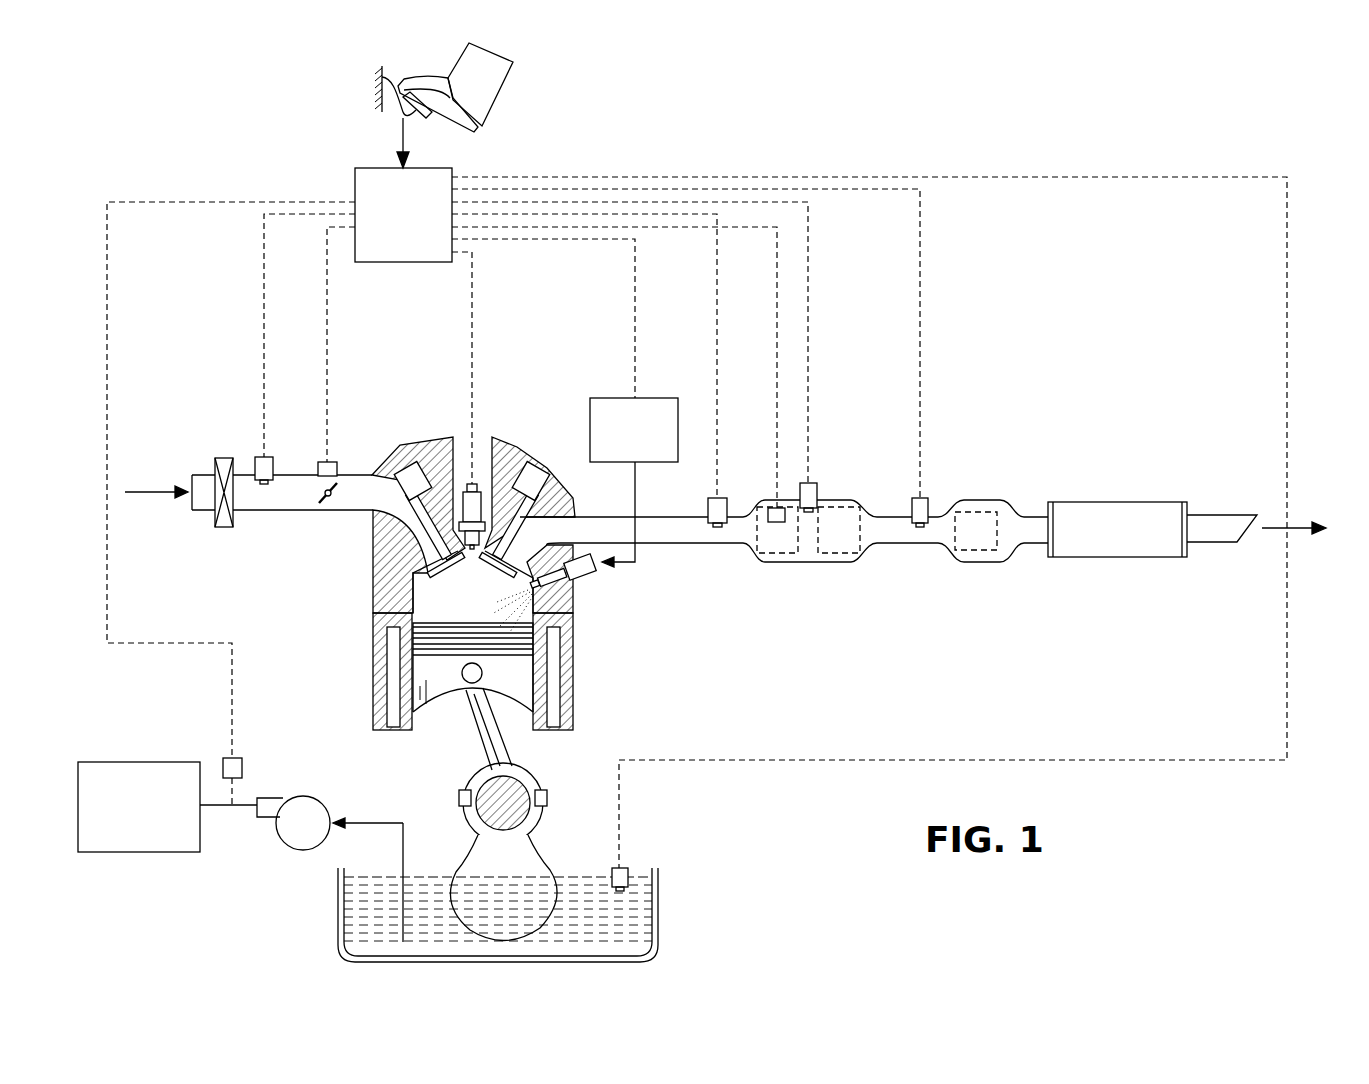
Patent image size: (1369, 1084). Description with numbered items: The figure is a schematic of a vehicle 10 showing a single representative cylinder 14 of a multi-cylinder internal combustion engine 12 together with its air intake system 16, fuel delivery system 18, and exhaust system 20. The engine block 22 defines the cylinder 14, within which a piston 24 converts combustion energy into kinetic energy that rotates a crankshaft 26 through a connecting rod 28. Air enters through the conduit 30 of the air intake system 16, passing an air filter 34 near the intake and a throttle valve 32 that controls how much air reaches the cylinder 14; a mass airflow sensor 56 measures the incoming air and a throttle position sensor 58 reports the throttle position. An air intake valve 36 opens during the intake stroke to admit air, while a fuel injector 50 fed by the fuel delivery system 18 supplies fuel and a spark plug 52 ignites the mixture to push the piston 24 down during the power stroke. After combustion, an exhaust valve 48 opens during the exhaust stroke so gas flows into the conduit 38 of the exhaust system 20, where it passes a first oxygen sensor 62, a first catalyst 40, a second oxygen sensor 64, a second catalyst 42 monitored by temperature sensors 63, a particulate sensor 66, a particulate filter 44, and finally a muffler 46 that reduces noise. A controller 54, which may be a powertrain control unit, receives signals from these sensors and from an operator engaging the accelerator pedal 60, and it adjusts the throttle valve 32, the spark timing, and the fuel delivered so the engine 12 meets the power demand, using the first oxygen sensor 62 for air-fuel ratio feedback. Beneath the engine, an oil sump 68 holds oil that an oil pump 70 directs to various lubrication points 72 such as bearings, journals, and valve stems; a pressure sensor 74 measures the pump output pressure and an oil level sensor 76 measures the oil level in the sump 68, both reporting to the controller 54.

The vehicle 10 is at (188, 106).
The internal combustion engine 12 is at (587, 660).
The cylinder 14 is at (476, 609).
The air intake system 16 is at (358, 406).
The fuel delivery system 18 is at (606, 396).
The exhaust system 20 is at (972, 452).
The engine block 22 is at (568, 683).
The piston 24 is at (438, 703).
The crankshaft 26 is at (505, 805).
The connecting rod 28 is at (462, 798).
The conduit 30 is at (244, 522).
The throttle valve 32 is at (326, 500).
The air filter 34 is at (214, 466).
The air intake valve 36 is at (378, 548).
The conduit 38 is at (908, 552).
The first catalyst 40 is at (782, 554).
The second catalyst 42 is at (850, 554).
The particulate filter 44 is at (973, 551).
The muffler 46 is at (1088, 502).
The exhaust valve 48 is at (508, 460).
The fuel injector 50 is at (574, 584).
The spark plug 52 is at (470, 484).
The controller 54 is at (377, 166).
The mass airflow sensor 56 is at (255, 468).
The throttle position sensor 58 is at (318, 468).
The accelerator pedal 60 is at (397, 117).
The first oxygen sensor 62 is at (708, 509).
The temperature sensor 63 is at (768, 511).
The second oxygen sensor 64 is at (817, 495).
The particulate sensor 66 is at (912, 509).
The oil sump 68 is at (600, 952).
The oil pump 70 is at (270, 797).
The lubrication points 72 is at (155, 762).
The pressure sensor 74 is at (231, 757).
The oil level sensor 76 is at (622, 860).